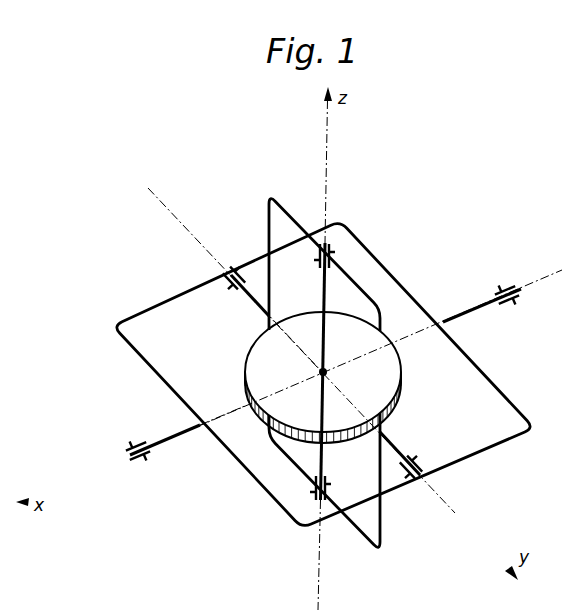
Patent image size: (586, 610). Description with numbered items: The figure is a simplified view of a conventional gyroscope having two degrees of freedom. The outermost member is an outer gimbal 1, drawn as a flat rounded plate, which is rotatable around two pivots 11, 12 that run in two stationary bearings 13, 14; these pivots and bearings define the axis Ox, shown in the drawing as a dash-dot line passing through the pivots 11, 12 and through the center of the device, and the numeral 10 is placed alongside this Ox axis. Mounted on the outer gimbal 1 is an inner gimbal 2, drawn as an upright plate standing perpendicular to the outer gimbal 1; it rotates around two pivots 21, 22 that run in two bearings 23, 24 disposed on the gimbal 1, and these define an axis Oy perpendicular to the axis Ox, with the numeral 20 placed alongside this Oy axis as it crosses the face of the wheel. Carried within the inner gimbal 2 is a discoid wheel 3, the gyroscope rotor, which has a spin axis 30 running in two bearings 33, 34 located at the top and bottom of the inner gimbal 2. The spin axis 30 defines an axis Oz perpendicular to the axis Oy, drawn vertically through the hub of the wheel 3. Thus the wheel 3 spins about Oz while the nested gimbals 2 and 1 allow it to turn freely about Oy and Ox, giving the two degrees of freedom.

The outer gimbal 1 is at (489, 378).
The inner gimbal 2 is at (300, 207).
The discoid wheel 3 is at (401, 358).
The first rotation axis (x axis) 10 is at (232, 412).
The pivot 11 is at (178, 442).
The pivot 12 is at (476, 307).
The stationary bearing 13 is at (131, 439).
The stationary bearing 14 is at (498, 281).
The second rotation axis (y axis) 20 is at (298, 354).
The pivot 21 is at (392, 433).
The pivot 22 is at (250, 300).
The bearing 23 is at (419, 462).
The bearing 24 is at (237, 268).
The spin axis 30 is at (323, 297).
The bearing 33 is at (319, 265).
The bearing 34 is at (327, 485).